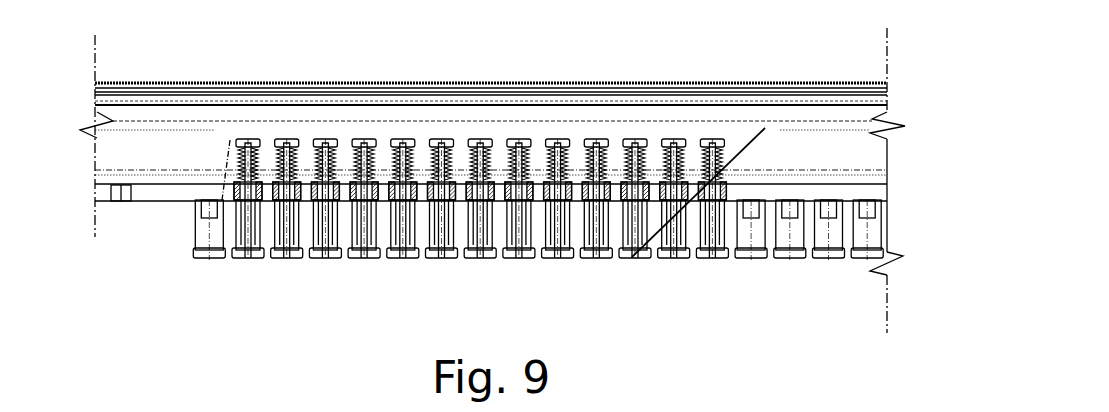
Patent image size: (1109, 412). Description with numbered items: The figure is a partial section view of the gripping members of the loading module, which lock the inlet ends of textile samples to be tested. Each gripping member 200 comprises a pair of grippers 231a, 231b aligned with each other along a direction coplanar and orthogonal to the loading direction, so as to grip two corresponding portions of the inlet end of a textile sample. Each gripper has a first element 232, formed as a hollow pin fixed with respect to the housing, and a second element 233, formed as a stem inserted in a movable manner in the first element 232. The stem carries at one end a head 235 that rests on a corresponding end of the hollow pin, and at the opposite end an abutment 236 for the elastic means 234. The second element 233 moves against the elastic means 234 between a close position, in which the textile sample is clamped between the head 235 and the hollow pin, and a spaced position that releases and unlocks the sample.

The gripping member 200 is at (492, 208).
The gripper 231a is at (248, 253).
The gripper 231b is at (248, 253).
The first element 232 is at (304, 248).
The second element 233 is at (183, 244).
The elastic means 234 is at (298, 104).
The head 235 is at (268, 242).
The abutment 236 is at (231, 89).